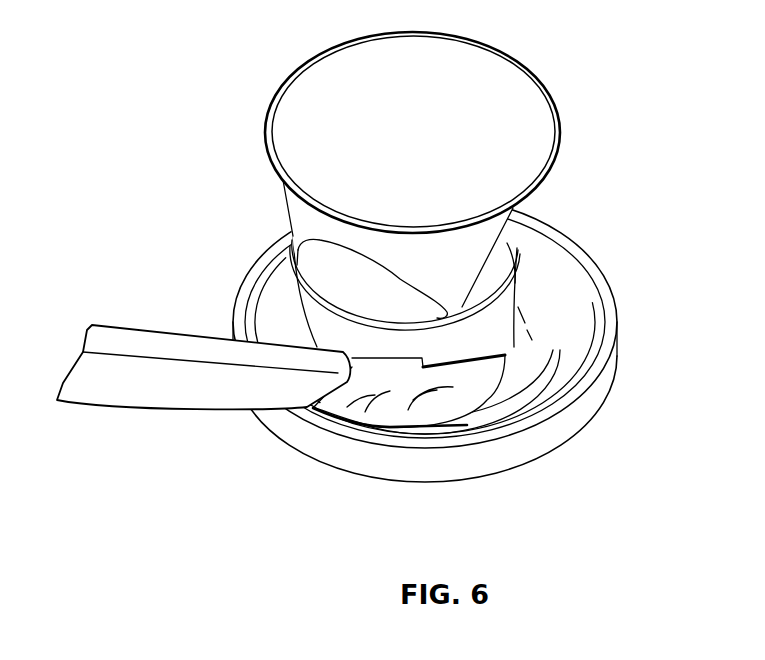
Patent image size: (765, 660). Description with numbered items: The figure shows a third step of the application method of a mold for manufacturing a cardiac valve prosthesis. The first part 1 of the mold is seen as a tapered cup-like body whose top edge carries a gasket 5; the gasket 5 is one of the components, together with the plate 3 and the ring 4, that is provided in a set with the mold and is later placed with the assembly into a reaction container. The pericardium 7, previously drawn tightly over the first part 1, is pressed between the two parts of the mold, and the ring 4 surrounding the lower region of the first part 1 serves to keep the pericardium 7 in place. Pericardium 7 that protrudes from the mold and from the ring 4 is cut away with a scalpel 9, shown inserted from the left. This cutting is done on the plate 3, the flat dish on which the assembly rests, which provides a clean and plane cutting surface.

The first part 1 is at (467, 265).
The plate 3 is at (560, 427).
The ring 4 is at (487, 330).
The gasket 5 is at (540, 185).
The pericardium 7 is at (433, 402).
The scalpel 9 is at (213, 397).